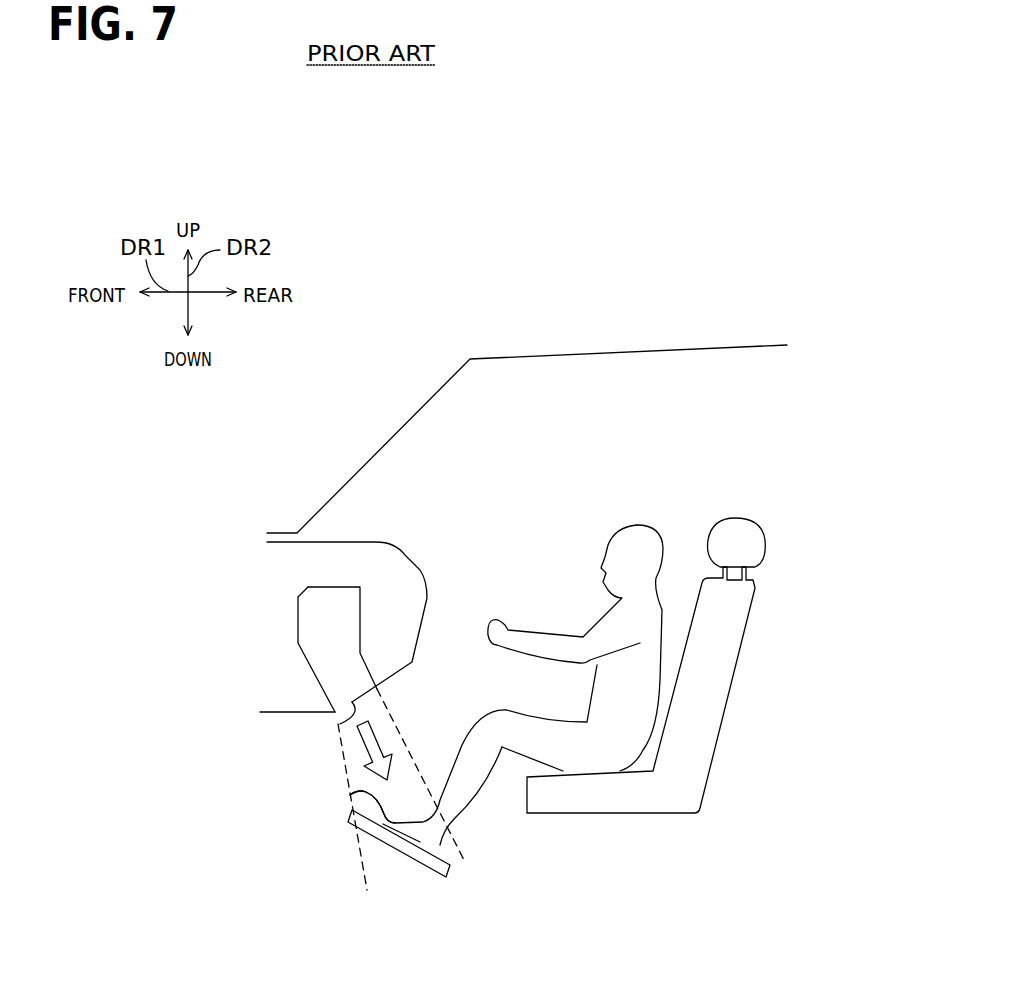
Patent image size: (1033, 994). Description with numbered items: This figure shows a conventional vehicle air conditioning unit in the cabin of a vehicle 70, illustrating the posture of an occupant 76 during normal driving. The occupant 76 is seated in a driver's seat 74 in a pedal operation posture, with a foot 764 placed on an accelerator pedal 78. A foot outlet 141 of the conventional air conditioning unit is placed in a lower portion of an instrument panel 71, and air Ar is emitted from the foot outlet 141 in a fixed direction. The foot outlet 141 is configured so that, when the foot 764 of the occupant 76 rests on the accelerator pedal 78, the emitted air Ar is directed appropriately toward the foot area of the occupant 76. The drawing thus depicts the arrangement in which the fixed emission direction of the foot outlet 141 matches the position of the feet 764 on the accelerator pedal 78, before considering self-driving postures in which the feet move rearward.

The vehicle 70 is at (490, 356).
The instrument panel 71 is at (280, 540).
The foot outlet 141 is at (338, 722).
The air Ar is at (360, 746).
The occupant 76 is at (616, 527).
The foot 764 is at (350, 793).
The accelerator pedal 78 is at (448, 878).
The driver's seat 74 is at (742, 645).